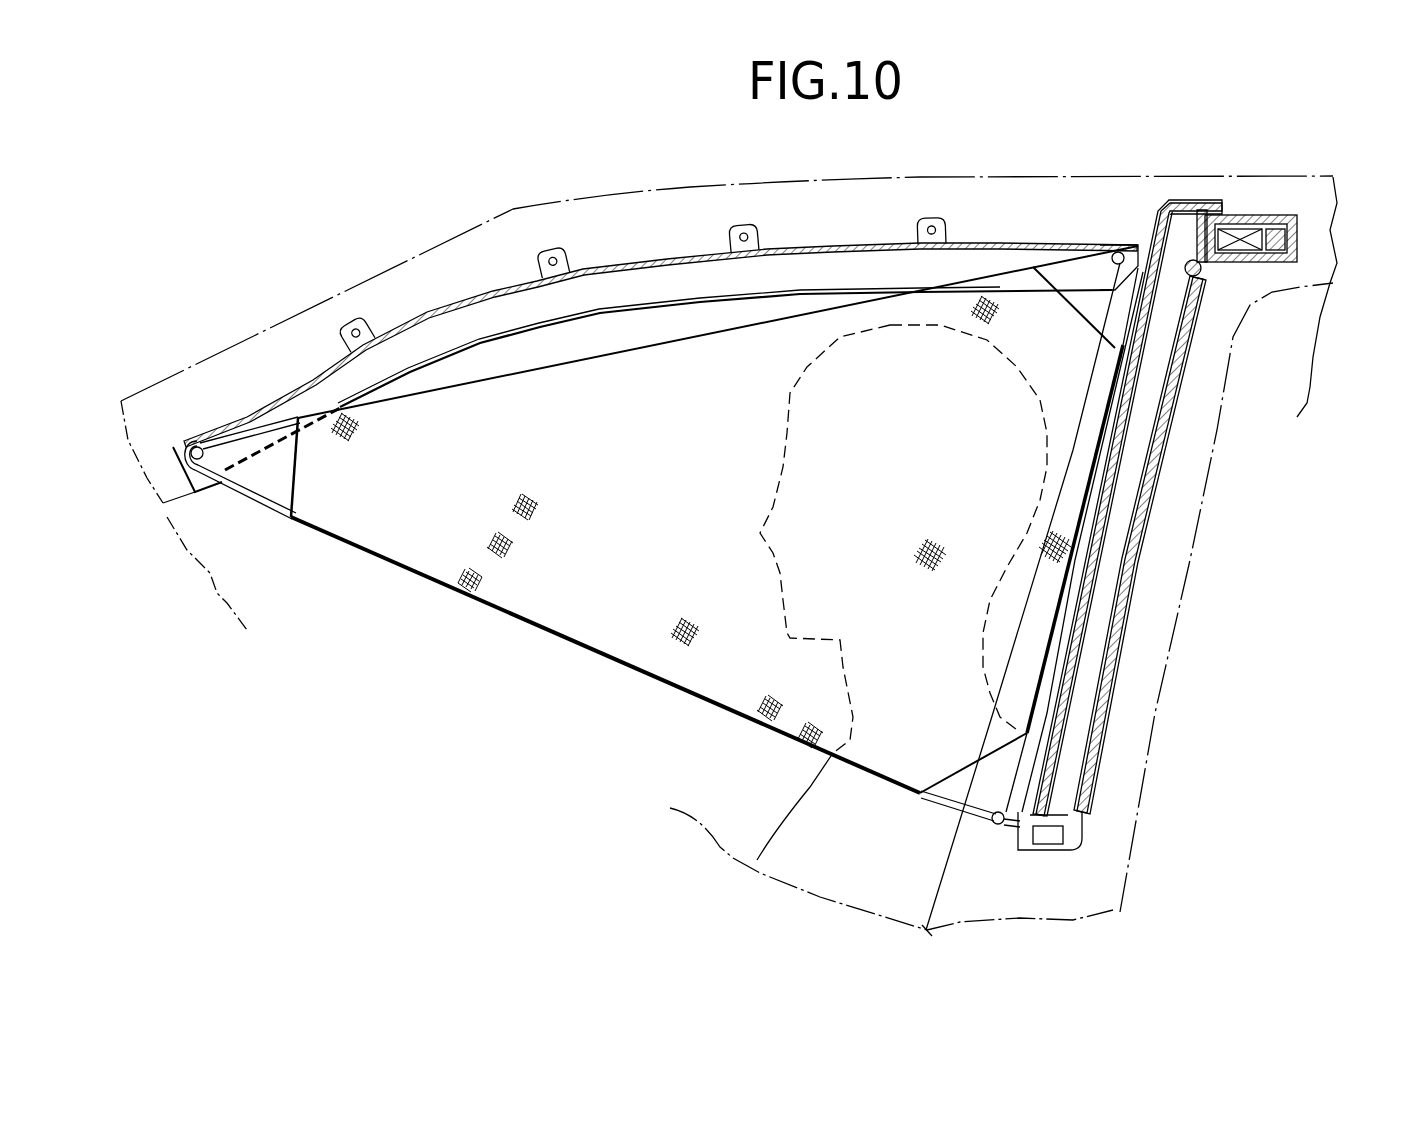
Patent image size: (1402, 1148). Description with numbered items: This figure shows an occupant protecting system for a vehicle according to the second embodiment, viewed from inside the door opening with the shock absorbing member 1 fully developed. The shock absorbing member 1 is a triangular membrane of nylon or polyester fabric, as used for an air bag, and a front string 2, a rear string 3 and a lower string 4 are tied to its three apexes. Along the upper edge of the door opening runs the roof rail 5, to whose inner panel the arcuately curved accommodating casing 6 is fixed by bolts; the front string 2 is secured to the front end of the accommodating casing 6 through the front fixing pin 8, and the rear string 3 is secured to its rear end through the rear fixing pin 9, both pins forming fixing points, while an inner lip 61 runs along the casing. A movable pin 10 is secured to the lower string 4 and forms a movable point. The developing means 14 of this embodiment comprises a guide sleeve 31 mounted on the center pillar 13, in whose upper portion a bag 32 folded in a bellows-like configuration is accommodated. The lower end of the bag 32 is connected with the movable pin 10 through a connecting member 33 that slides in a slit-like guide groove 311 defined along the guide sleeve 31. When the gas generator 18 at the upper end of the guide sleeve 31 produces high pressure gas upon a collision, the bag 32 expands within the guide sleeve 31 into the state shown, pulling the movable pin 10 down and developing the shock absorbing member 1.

The shock absorbing member 1 is at (592, 638).
The front string 2 is at (265, 486).
The rear string 3 is at (1080, 243).
The lower string 4 is at (928, 805).
The roof rail 5 is at (453, 232).
The accommodating casing 6 is at (393, 323).
The weatherstrip inner lip 61 is at (588, 315).
The front fixing pin 8 is at (197, 446).
The rear fixing pin 9 is at (1118, 252).
The movable pin 10 is at (998, 826).
The center pillar 13 is at (1154, 706).
The developing means 14 is at (1190, 392).
The gas generator 18 is at (1302, 242).
The guide sleeve 31 is at (1155, 527).
The guide groove 311 is at (1112, 347).
The bag 32 is at (1095, 568).
The connecting member 33 is at (1012, 850).